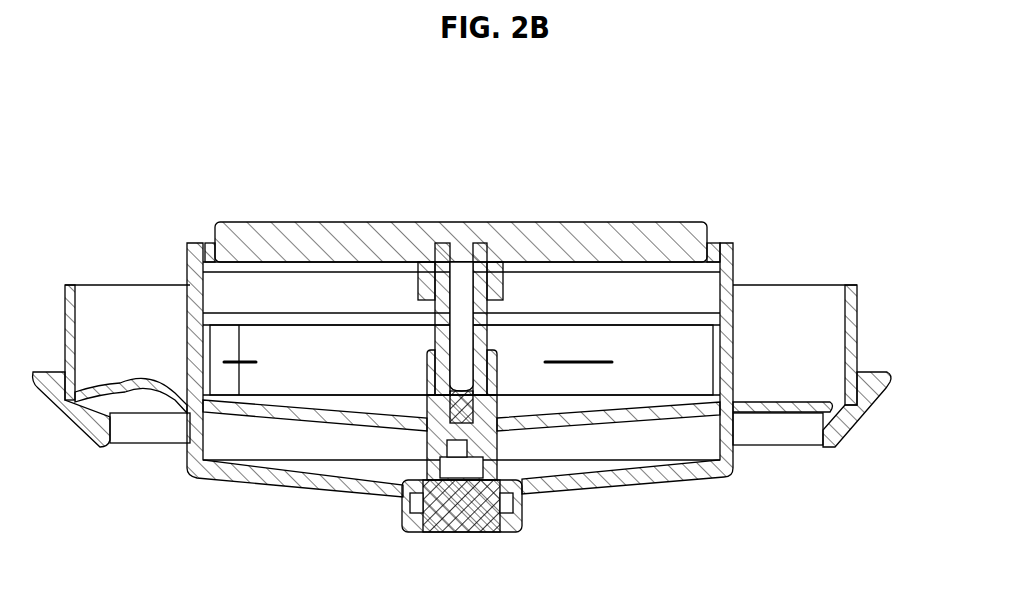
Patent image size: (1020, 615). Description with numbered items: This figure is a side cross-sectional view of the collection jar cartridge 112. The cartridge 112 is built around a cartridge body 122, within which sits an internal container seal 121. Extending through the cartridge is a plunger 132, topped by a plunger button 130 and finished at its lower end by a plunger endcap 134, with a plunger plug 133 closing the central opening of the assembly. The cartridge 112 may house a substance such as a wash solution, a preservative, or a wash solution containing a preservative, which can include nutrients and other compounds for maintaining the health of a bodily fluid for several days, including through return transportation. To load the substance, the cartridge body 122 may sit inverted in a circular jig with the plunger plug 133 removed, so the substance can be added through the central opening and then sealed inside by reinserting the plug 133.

The collection jar cartridge 112 is at (453, 187).
The internal container seal 121 is at (712, 357).
The cartridge body 122 is at (725, 280).
The plunger button 130 is at (576, 247).
The plunger 132 is at (448, 318).
The plunger plug 133 is at (460, 428).
The plunger endcap 134 is at (460, 522).